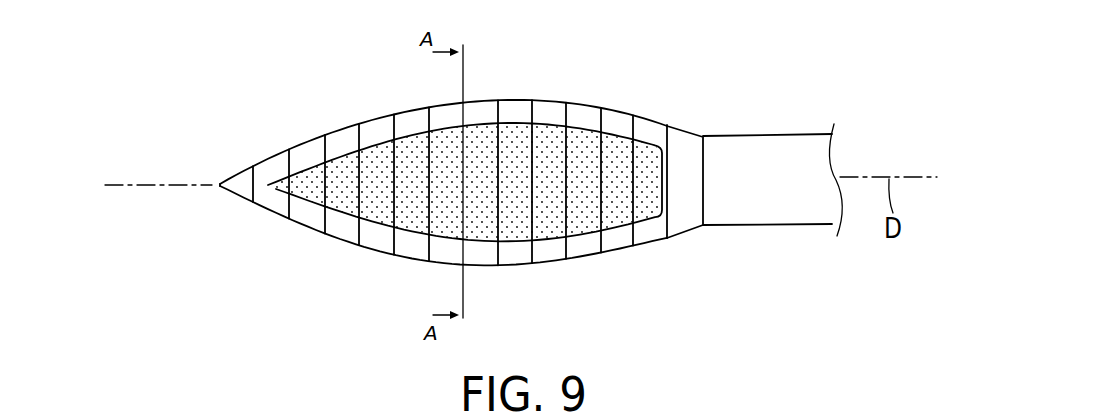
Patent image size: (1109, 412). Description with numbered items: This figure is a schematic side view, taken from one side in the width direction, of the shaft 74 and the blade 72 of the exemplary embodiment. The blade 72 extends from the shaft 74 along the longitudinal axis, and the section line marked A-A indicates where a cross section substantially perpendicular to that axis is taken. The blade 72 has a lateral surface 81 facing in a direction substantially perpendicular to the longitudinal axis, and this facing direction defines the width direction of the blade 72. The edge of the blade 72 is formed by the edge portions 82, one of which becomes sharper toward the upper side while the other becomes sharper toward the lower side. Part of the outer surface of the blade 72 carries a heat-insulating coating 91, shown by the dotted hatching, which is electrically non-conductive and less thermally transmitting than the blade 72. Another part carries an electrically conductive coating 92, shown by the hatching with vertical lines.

The blade 72 is at (606, 164).
The shaft 74 is at (766, 146).
The lateral surface 81 is at (575, 147).
The edge portions 82 is at (634, 110).
The heat-insulating coating 91 is at (517, 140).
The electrically conductive coating 92 is at (410, 118).